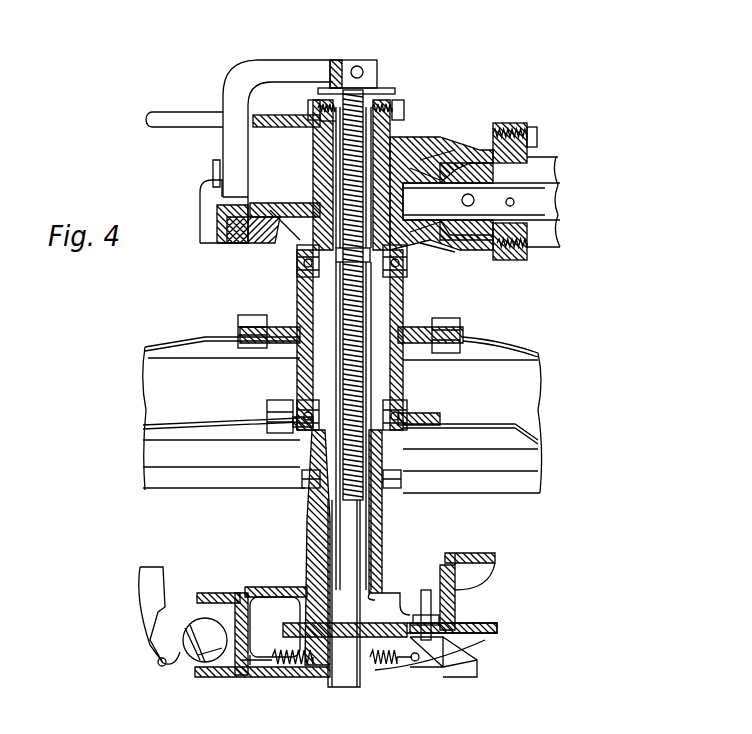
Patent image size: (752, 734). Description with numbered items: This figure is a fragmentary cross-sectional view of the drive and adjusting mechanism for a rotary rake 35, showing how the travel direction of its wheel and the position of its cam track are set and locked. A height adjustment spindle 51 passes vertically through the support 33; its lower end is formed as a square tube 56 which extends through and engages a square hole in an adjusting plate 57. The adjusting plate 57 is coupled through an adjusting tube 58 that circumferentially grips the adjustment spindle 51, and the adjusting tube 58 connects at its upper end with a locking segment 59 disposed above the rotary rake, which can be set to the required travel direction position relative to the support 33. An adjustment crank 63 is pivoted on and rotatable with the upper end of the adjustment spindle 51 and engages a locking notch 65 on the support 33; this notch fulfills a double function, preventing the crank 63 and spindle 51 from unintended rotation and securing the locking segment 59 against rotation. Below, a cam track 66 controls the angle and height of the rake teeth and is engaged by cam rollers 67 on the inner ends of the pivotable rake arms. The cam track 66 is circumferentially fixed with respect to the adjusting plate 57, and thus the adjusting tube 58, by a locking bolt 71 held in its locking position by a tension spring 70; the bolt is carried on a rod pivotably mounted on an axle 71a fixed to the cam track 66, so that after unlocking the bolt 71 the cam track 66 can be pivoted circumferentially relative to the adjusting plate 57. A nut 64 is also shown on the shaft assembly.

The support 33 is at (545, 160).
The rotary rake 35 is at (528, 345).
The adjustment spindle 51 is at (345, 160).
The square tube 56 is at (383, 548).
The adjusting plate 57 is at (404, 636).
The adjusting tube 58 is at (395, 140).
The locking segment 59 is at (265, 120).
The adjustment crank 63 is at (302, 72).
The nut 64 is at (462, 155).
The locking notch 65 is at (213, 198).
The cam track 66 is at (478, 625).
The cam roller 67 is at (195, 618).
The tension spring 70 is at (282, 660).
The locking bolt 71 is at (437, 632).
The axle 71a is at (440, 590).